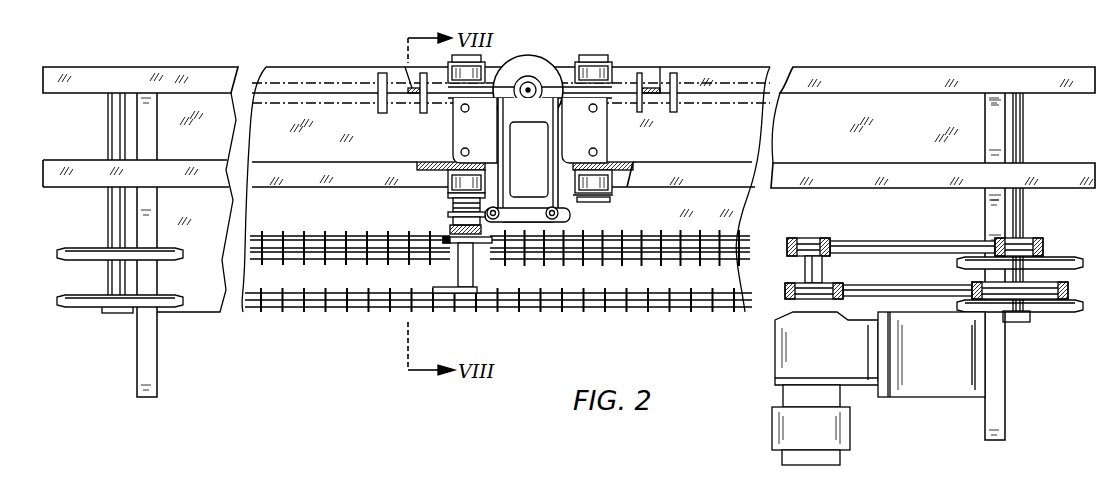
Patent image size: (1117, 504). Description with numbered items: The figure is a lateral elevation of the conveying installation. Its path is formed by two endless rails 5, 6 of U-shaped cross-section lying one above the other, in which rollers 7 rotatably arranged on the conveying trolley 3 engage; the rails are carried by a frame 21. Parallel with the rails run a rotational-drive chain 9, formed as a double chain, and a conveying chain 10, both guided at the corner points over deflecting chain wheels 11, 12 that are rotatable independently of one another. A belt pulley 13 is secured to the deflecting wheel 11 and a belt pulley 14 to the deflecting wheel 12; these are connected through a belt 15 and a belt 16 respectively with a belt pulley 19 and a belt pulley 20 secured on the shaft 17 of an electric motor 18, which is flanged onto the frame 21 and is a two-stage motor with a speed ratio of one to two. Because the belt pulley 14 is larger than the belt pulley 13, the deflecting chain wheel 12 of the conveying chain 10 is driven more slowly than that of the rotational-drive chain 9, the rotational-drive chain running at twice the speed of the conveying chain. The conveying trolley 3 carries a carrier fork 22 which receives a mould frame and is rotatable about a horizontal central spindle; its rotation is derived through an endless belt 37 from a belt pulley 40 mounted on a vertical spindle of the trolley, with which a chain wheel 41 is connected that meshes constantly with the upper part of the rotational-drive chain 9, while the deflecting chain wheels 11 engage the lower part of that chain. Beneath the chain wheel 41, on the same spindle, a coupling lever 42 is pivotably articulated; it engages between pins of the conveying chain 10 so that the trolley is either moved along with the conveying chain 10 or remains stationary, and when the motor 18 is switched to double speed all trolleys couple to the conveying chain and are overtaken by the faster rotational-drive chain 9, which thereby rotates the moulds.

The conveying trolley 3 is at (612, 64).
The upper rail 5 is at (687, 73).
The lower rail 6 is at (700, 170).
The roller 7 is at (594, 70).
The rotational-drive chain 9 is at (280, 234).
The conveying chain 10 is at (292, 308).
The deflecting chain wheel 11 is at (84, 248).
The deflecting chain wheel 12 is at (89, 300).
The belt pulley 13 is at (1034, 250).
The belt pulley 14 is at (1064, 284).
The belt 15 is at (897, 247).
The belt 16 is at (935, 296).
The motor shaft 17 is at (812, 269).
The electric motor 18 is at (793, 358).
The belt pulley 19 is at (828, 249).
The belt pulley 20 is at (786, 298).
The frame 21 is at (148, 350).
The carrier fork 22 is at (362, 98).
The endless belt 37 is at (502, 172).
The belt pulley 40 is at (452, 212).
The chain wheel 41 is at (452, 238).
The coupling lever 42 is at (458, 293).